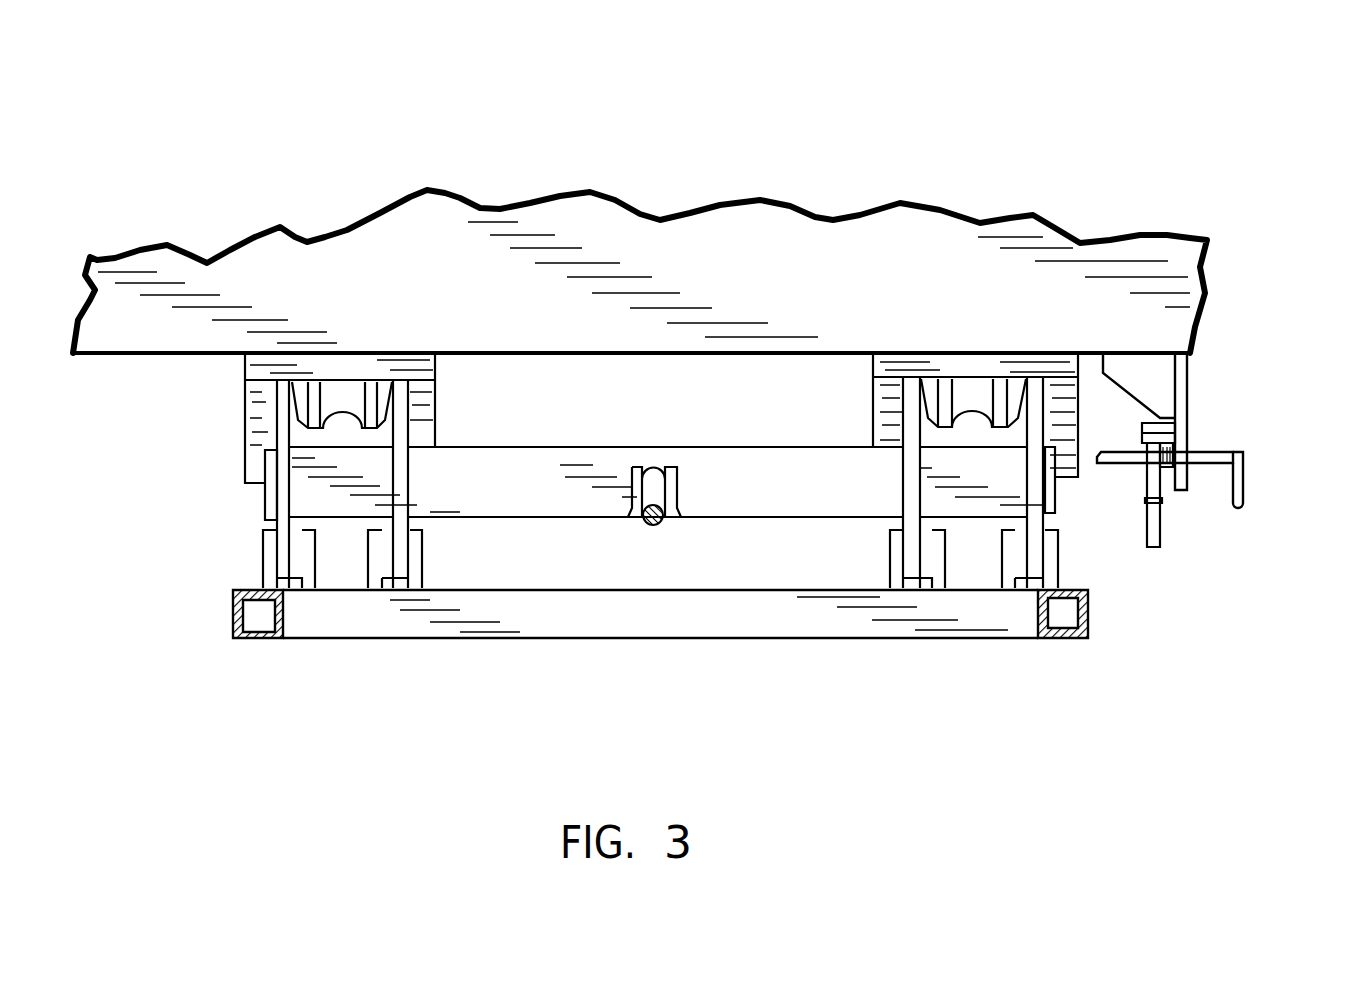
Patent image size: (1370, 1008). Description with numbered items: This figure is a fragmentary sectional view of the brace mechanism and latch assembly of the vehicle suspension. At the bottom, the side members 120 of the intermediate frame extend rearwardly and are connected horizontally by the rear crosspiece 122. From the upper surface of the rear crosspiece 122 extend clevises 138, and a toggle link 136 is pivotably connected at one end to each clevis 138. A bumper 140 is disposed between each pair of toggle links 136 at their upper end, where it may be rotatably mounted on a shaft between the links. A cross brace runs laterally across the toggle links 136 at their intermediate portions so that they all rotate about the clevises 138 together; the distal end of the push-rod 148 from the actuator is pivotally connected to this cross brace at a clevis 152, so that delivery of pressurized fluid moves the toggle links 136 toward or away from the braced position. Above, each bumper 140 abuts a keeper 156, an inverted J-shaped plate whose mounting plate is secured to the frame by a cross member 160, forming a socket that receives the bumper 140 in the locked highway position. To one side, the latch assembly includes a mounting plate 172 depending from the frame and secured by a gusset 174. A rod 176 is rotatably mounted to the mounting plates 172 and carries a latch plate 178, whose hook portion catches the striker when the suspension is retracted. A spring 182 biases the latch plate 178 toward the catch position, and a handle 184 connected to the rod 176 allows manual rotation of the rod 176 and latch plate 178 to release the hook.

The side member 120 is at (233, 625).
The rear crosspiece 122 is at (713, 623).
The toggle link 136 is at (287, 495).
The clevis 138 is at (268, 570).
The bumper 140 is at (341, 388).
The push-rod 148 is at (657, 523).
The clevis 152 is at (675, 467).
The keeper 156 is at (433, 411).
The cross member 160 is at (707, 245).
The mounting plate 172 is at (1187, 385).
The gusset 174 is at (1148, 393).
The rod 176 is at (1128, 458).
The latch plate 178 is at (1157, 547).
The spring 182 is at (1165, 468).
The handle 184 is at (1247, 478).